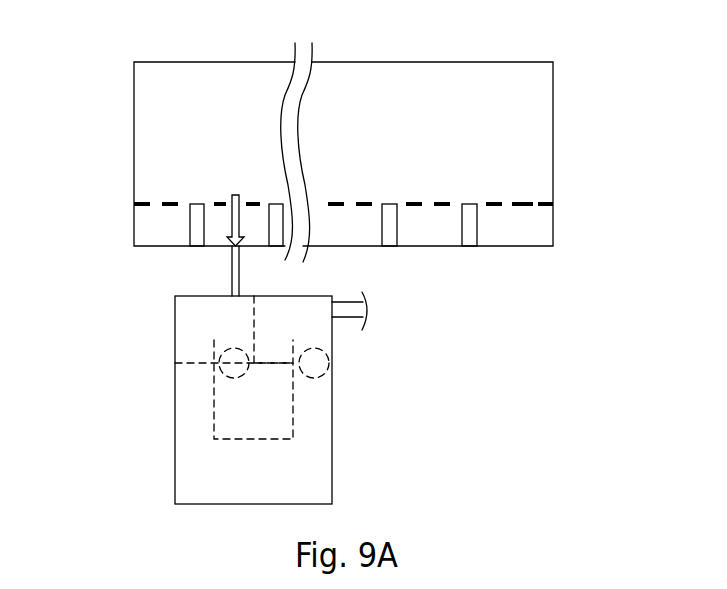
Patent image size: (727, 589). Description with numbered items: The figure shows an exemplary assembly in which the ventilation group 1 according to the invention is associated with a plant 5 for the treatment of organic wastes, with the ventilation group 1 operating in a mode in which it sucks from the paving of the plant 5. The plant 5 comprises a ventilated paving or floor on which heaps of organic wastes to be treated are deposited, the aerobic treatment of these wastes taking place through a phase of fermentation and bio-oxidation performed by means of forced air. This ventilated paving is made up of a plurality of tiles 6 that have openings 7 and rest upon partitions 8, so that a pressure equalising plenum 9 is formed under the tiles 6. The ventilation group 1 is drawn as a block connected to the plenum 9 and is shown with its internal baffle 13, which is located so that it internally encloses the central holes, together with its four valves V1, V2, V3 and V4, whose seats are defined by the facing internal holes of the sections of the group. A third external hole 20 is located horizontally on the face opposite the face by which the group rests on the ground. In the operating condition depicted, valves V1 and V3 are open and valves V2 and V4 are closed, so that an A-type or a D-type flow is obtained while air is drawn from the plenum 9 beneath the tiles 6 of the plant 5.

The plant 5 is at (505, 57).
The tiles 6 is at (493, 202).
The openings 7 is at (508, 202).
The partitions 8 is at (470, 232).
The pressure equalising plenum 9 is at (436, 238).
The third external hole 20 is at (333, 317).
The ventilation group 1 is at (187, 513).
The baffle 13 is at (225, 442).
The valve V1 is at (314, 364).
The valve V2 is at (270, 366).
The valve V3 is at (235, 368).
The valve V4 is at (193, 360).